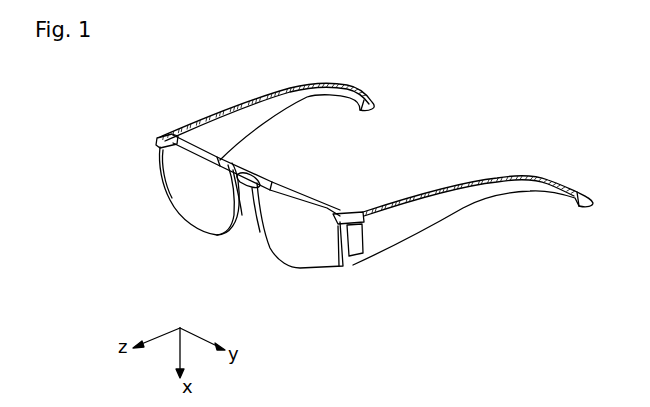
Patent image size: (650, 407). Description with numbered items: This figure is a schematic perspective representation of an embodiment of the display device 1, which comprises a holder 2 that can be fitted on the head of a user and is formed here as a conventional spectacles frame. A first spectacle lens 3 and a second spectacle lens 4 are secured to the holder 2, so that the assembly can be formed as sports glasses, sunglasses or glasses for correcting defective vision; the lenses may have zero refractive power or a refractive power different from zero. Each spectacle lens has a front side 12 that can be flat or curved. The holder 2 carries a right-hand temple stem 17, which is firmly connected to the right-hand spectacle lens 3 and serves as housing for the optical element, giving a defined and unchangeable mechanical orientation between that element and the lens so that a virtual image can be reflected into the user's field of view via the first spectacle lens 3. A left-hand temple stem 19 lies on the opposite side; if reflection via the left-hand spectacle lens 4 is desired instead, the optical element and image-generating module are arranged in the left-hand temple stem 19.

The display device 1 is at (254, 237).
The holder 2 is at (283, 92).
The first spectacle lens 3 is at (184, 214).
The second spectacle lens 4 is at (297, 263).
The front side 12 is at (172, 194).
The right-hand temple stem 17 is at (220, 106).
The left-hand temple stem 19 is at (441, 187).